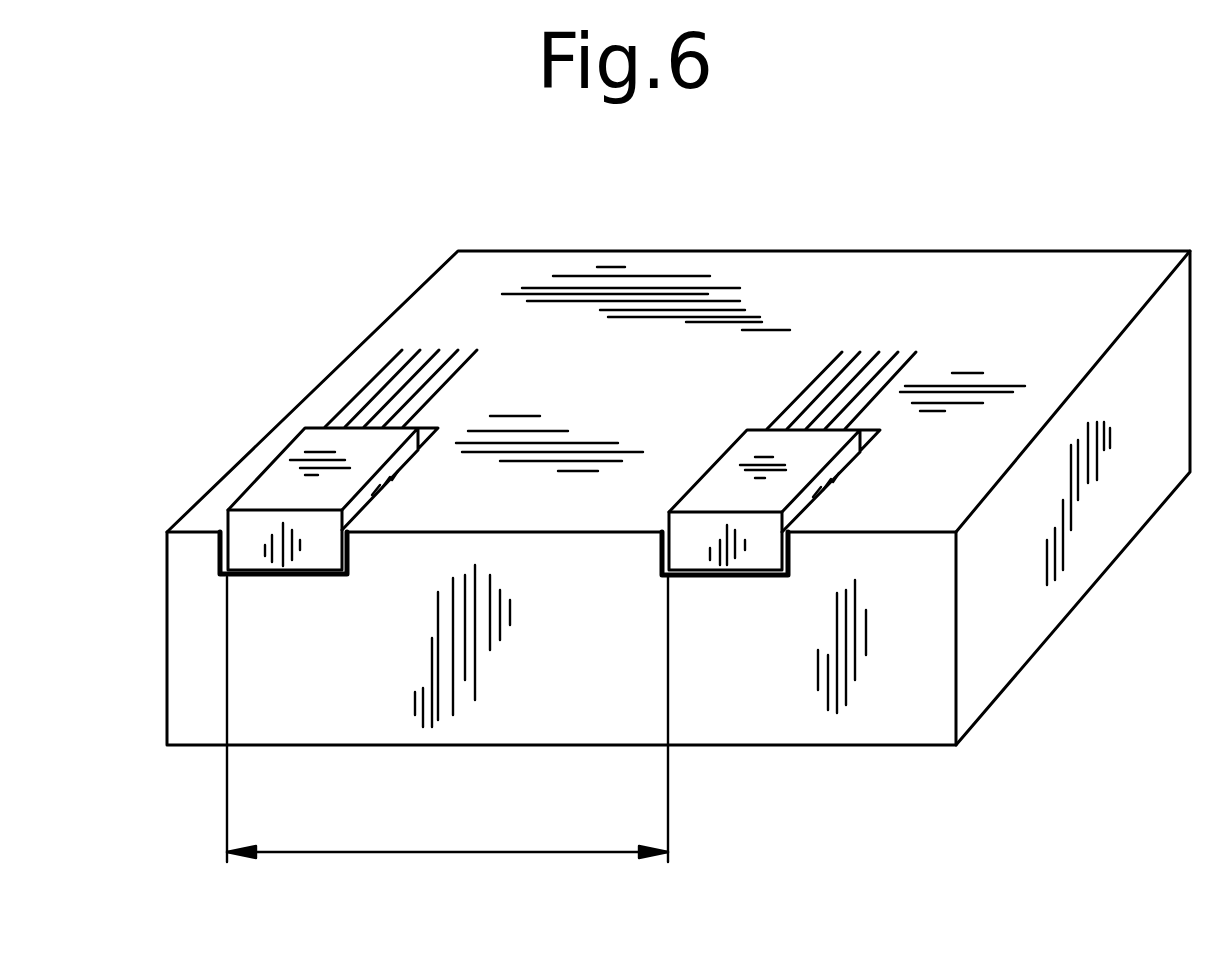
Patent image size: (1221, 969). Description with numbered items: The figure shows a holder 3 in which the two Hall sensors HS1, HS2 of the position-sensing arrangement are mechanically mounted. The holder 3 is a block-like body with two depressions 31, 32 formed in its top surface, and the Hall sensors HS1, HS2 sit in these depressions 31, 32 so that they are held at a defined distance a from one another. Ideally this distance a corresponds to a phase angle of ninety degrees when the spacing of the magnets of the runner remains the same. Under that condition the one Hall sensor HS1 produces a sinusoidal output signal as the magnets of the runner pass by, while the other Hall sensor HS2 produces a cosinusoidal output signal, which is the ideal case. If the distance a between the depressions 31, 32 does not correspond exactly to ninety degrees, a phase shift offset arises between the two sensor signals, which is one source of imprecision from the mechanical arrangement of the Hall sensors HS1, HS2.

The holder 3 is at (1098, 528).
The Hall sensor HS1 is at (280, 483).
The Hall sensor HS2 is at (732, 472).
The depression 31 is at (300, 575).
The depression 32 is at (742, 576).
The distance a is at (393, 846).